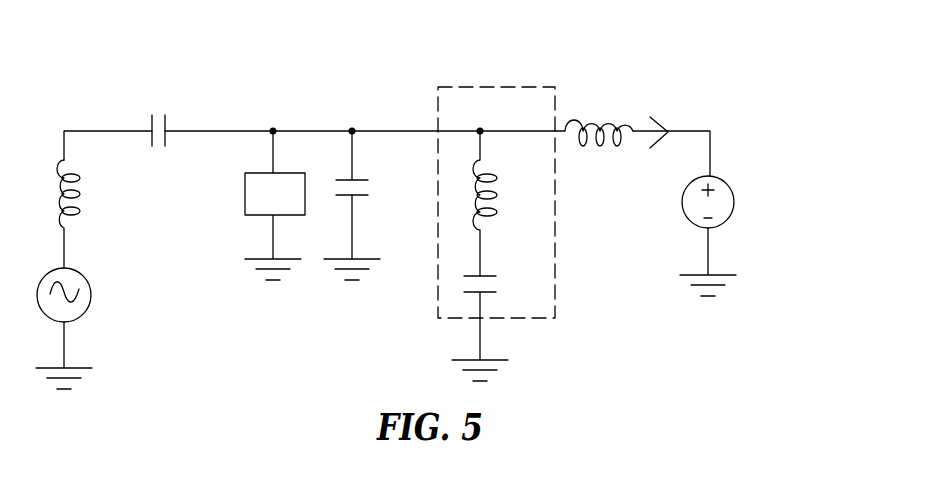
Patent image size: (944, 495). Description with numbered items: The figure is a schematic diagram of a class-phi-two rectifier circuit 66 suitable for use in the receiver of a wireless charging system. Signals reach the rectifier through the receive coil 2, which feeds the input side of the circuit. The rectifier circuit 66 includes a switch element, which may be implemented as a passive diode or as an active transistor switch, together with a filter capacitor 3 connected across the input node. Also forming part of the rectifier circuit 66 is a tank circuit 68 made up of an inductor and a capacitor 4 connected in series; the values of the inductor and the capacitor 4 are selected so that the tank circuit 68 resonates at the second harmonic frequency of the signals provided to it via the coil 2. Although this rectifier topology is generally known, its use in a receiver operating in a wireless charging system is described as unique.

The class-phi-two rectifier circuit 66 is at (412, 194).
The L4-C4 tank circuit 68 is at (500, 191).
The C2 capacitor and L2 inductor 2 is at (114, 172).
The C3 capacitor and L3 inductor 3 is at (478, 180).
The L4 inductor and C4 capacitor 4 is at (491, 256).